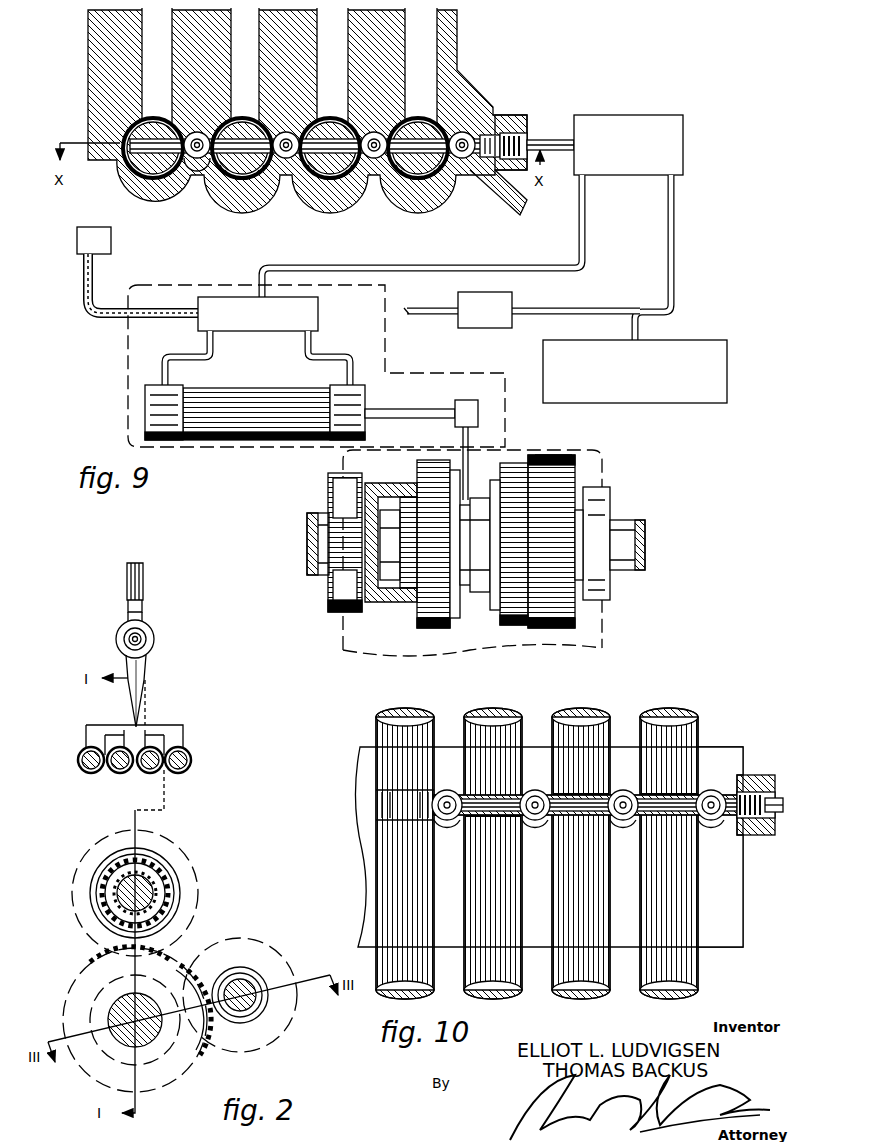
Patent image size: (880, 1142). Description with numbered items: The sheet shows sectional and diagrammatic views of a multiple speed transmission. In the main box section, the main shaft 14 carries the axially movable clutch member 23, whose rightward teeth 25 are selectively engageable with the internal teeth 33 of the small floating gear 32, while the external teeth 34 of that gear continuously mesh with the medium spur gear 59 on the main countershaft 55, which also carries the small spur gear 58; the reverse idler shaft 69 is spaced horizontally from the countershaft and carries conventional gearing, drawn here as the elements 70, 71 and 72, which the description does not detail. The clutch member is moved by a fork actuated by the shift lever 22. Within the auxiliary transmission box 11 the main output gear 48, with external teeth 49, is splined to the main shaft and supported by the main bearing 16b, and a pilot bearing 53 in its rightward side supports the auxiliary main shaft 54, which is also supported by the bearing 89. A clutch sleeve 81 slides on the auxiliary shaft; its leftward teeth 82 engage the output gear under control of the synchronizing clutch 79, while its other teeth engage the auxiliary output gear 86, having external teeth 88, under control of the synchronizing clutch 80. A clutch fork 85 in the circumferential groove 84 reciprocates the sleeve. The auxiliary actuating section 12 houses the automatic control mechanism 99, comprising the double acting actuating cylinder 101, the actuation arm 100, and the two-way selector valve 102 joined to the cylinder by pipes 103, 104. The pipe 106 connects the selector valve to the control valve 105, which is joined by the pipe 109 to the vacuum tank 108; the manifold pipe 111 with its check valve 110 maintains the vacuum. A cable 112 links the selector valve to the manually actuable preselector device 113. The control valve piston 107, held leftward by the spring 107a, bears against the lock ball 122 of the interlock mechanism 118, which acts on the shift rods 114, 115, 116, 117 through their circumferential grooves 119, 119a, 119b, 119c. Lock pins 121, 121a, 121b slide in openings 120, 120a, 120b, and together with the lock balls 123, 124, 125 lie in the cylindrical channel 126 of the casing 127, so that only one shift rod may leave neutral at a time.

In FIG. 9, the auxiliary transmission box 11 is at (607, 628).
In FIG. 9, the auxiliary actuating section 12 is at (126, 376).
In FIG. 9, the main shaft 14 is at (313, 523).
In FIG. 2, the main shaft 14 is at (135, 879).
In FIG. 9, the main bearing 16b is at (330, 598).
In FIG. 2, the shift lever 22 is at (130, 668).
In FIG. 2, the clutch member 23 is at (160, 862).
In FIG. 2, the rightward teeth 25 is at (172, 893).
In FIG. 2, the small floating gear 32 is at (84, 850).
In FIG. 2, the internal teeth 33 is at (100, 893).
In FIG. 2, the external teeth 34 is at (78, 912).
In FIG. 9, the main output gear 48 is at (369, 582).
In FIG. 9, the external teeth 49 is at (388, 602).
In FIG. 9, the pilot bearing 53 is at (385, 515).
In FIG. 9, the auxiliary main shaft 54 is at (632, 565).
In FIG. 2, the main countershaft 55 is at (120, 1005).
In FIG. 2, the small spur gear 58 is at (95, 1014).
In FIG. 2, the medium spur gear 59 is at (160, 1065).
In FIG. 2, the reverse idler shaft 69 is at (233, 978).
In FIG. 2, the bearing 70 is at (252, 978).
In FIG. 2, the bearing race 71 is at (262, 1003).
In FIG. 2, the gear 72 is at (248, 938).
In FIG. 9, the synchronizing clutch 79 is at (432, 628).
In FIG. 9, the synchronizing clutch 80 is at (508, 625).
In FIG. 9, the clutch sleeve 81 is at (405, 590).
In FIG. 9, the leftward teeth 82 is at (410, 498).
In FIG. 9, the circumferential groove 84 is at (470, 586).
In FIG. 9, the clutch fork 85 is at (467, 460).
In FIG. 9, the auxiliary output gear 86 is at (540, 453).
In FIG. 9, the external teeth 88 is at (560, 470).
In FIG. 9, the bearing 89 is at (598, 497).
In FIG. 9, the automatic control mechanism 99 is at (266, 289).
In FIG. 9, the actuation arm 100 is at (386, 409).
In FIG. 9, the double acting actuating cylinder 101 is at (277, 440).
In FIG. 9, the two-way selector valve 102 is at (318, 308).
In FIG. 9, the pipe 103 is at (212, 352).
In FIG. 9, the pipe 104 is at (340, 355).
In FIG. 9, the control valve 105 is at (677, 128).
In FIG. 9, the pipe 106 is at (503, 270).
In FIG. 9, the control valve piston 107 is at (552, 139).
In FIG. 10, the control valve piston 107 is at (778, 813).
In FIG. 9, the spring 107a is at (523, 128).
In FIG. 10, the spring 107a is at (752, 775).
In FIG. 9, the vacuum tank 108 is at (700, 345).
In FIG. 9, the pipe 109 is at (674, 228).
In FIG. 9, the check valve 110 is at (478, 328).
In FIG. 9, the pipe 111 is at (578, 308).
In FIG. 9, the cable 112 is at (86, 306).
In FIG. 9, the preselector device 113 is at (77, 240).
In FIG. 9, the shift rod 114 is at (420, 125).
In FIG. 2, the shift rod 114 is at (186, 762).
In FIG. 10, the shift rod 114 is at (690, 960).
In FIG. 9, the shift rod 115 is at (332, 125).
In FIG. 2, the shift rod 115 is at (142, 770).
In FIG. 10, the shift rod 115 is at (598, 970).
In FIG. 9, the shift rod 116 is at (245, 128).
In FIG. 2, the shift rod 116 is at (113, 768).
In FIG. 10, the shift rod 116 is at (510, 970).
In FIG. 9, the shift rod 117 is at (163, 165).
In FIG. 2, the shift rod 117 is at (80, 757).
In FIG. 10, the shift rod 117 is at (420, 970).
In FIG. 9, the interlock mechanism 118 is at (497, 106).
In FIG. 10, the interlock mechanism 118 is at (722, 762).
In FIG. 9, the circumferential groove 119 is at (436, 180).
In FIG. 10, the circumferential groove 119 is at (635, 820).
In FIG. 9, the circumferential groove 119a is at (347, 180).
In FIG. 10, the circumferential groove 119a is at (545, 820).
In FIG. 9, the circumferential groove 119b is at (252, 180).
In FIG. 10, the circumferential groove 119b is at (455, 820).
In FIG. 9, the circumferential groove 119c is at (128, 172).
In FIG. 10, the circumferential groove 119c is at (375, 800).
In FIG. 9, the opening 120 is at (447, 125).
In FIG. 9, the opening 120a is at (350, 168).
In FIG. 9, the opening 120b is at (255, 170).
In FIG. 9, the lock pin 121 is at (412, 178).
In FIG. 10, the lock pin 121 is at (645, 790).
In FIG. 9, the lock pin 121a is at (332, 176).
In FIG. 10, the lock pin 121a is at (555, 790).
In FIG. 9, the lock pin 121b is at (237, 176).
In FIG. 10, the lock pin 121b is at (478, 816).
In FIG. 9, the lock ball 122 is at (465, 158).
In FIG. 10, the lock ball 122 is at (712, 820).
In FIG. 9, the lock ball 123 is at (378, 160).
In FIG. 10, the lock ball 123 is at (620, 790).
In FIG. 9, the lock ball 124 is at (290, 160).
In FIG. 10, the lock ball 124 is at (535, 790).
In FIG. 9, the lock ball 125 is at (190, 133).
In FIG. 10, the lock ball 125 is at (446, 790).
In FIG. 9, the cylindrical channel 126 is at (204, 160).
In FIG. 10, the cylindrical channel 126 is at (708, 790).
In FIG. 9, the casing 127 is at (105, 65).
In FIG. 10, the casing 127 is at (362, 867).